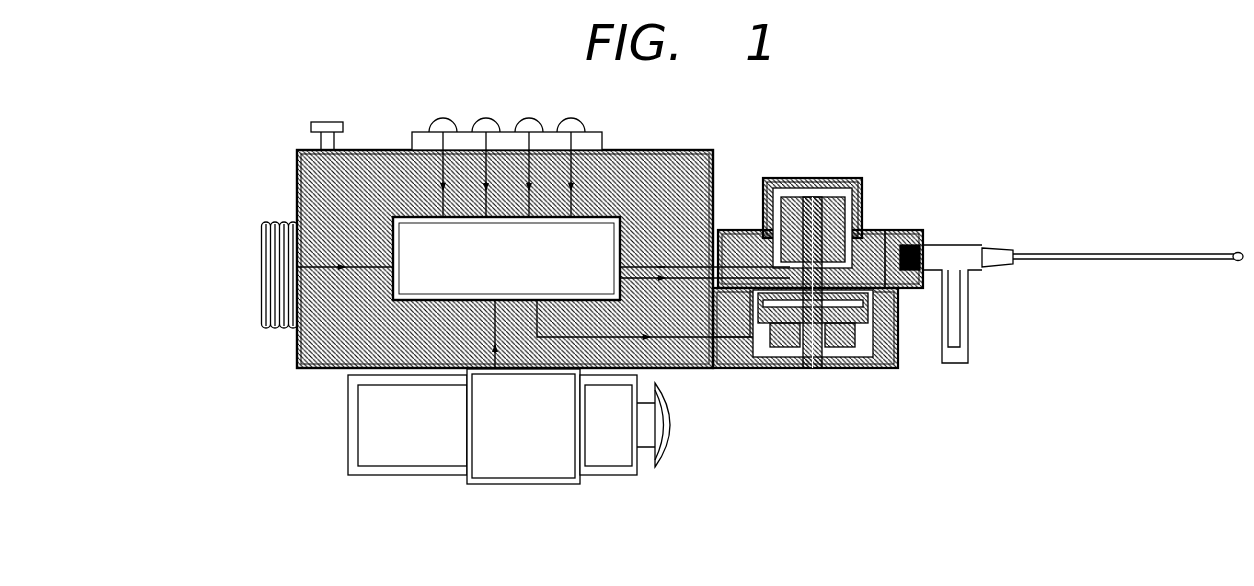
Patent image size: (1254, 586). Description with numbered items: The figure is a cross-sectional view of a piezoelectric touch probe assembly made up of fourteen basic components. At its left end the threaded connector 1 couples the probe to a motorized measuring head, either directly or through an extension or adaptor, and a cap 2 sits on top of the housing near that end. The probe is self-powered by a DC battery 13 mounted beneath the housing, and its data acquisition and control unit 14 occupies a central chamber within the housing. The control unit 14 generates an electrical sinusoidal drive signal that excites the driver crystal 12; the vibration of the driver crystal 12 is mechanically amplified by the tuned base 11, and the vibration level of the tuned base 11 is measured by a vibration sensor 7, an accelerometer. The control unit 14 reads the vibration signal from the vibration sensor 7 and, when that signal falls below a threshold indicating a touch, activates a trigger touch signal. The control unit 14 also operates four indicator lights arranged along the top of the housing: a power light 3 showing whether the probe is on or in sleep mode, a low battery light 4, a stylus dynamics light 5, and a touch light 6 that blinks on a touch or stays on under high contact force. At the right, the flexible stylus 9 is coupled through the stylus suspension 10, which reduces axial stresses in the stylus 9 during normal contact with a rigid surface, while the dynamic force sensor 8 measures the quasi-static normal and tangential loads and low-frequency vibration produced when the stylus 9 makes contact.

The threaded connector 1 is at (262, 281).
The screw cap 2 is at (322, 122).
The power indicator light 3 is at (437, 118).
The low battery indicator light 4 is at (483, 118).
The stylus dynamics indicator light 5 is at (531, 118).
The touch indicator light 6 is at (578, 118).
The vibration sensor 7 is at (808, 172).
The dynamic force sensor 8 is at (912, 216).
The flexible stylus 9 is at (1138, 232).
The stylus suspension 10 is at (983, 333).
The tuned base 11 is at (893, 322).
The driver crystal 12 is at (864, 372).
The DC battery 13 is at (426, 433).
The data acquisition and control unit 14 is at (516, 276).